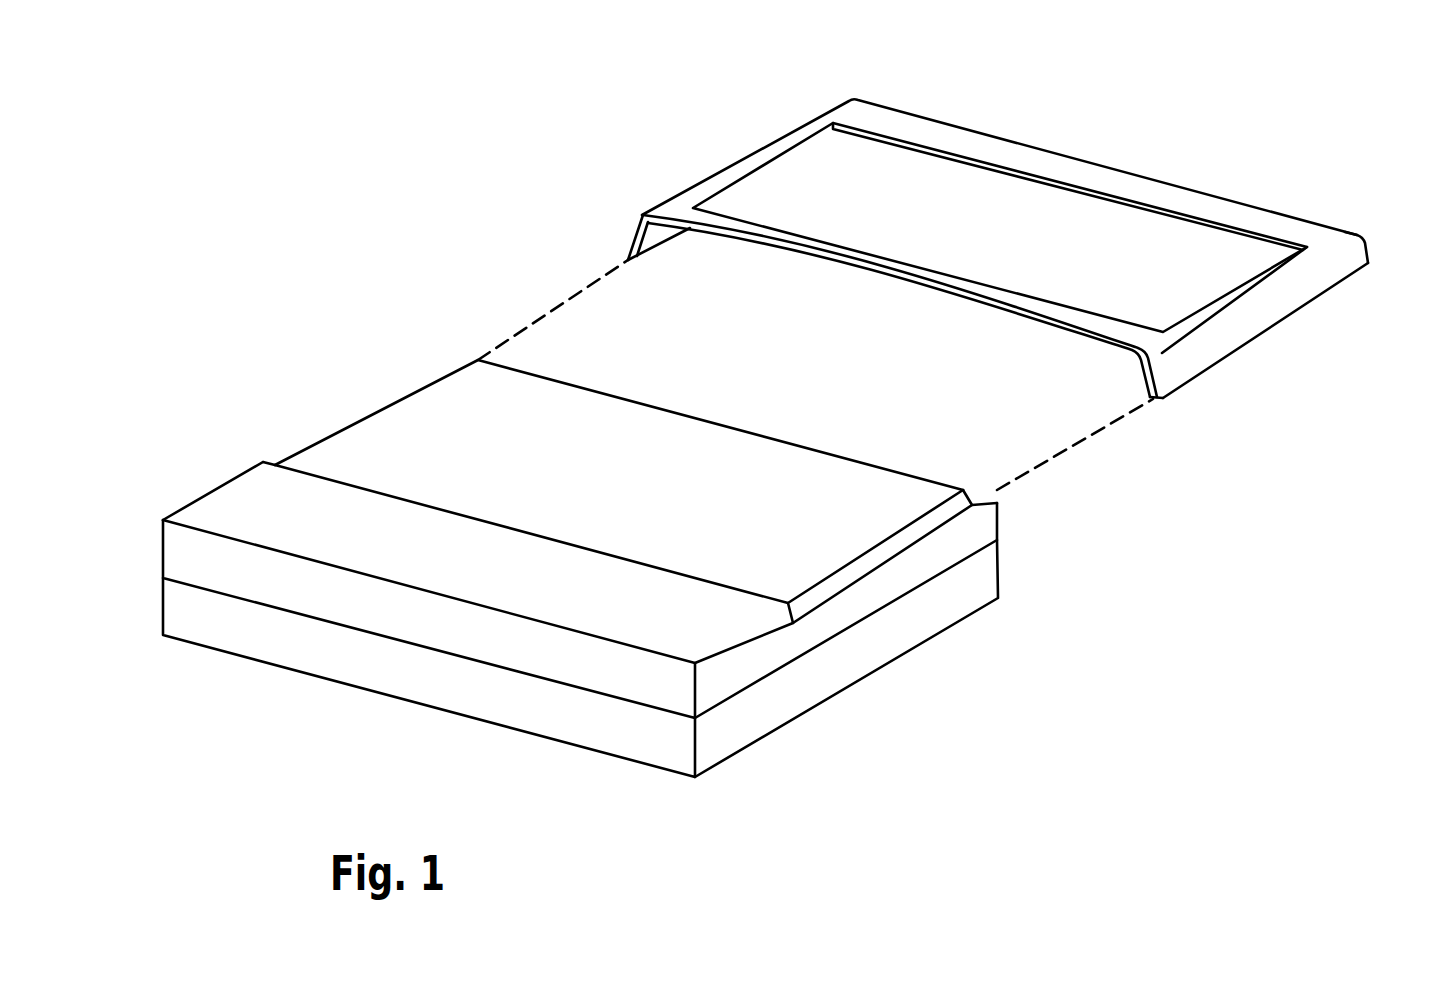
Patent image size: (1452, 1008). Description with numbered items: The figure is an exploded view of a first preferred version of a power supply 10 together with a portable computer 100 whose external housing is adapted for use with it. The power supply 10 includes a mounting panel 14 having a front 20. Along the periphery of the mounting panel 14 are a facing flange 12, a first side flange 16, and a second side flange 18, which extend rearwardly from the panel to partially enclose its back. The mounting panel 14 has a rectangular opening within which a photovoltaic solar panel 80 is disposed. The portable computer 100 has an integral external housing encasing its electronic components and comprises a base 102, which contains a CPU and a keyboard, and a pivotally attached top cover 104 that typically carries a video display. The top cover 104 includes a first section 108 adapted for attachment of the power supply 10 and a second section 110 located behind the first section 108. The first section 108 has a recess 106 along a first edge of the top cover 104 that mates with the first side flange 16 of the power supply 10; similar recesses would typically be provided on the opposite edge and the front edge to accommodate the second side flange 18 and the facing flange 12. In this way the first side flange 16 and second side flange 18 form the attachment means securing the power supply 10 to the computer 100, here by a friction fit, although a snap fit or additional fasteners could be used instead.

The power supply 10 is at (1002, 238).
The facing flange 12 is at (1043, 148).
The mounting panel 14 is at (1107, 323).
The first side flange 16 is at (1307, 280).
The second side flange 18 is at (658, 237).
The front 20 is at (1310, 230).
The photovoltaic solar panel 80 is at (1007, 229).
The portable computer 100 is at (636, 568).
The base 102 is at (895, 620).
The top cover 104 is at (765, 663).
The recess 106 is at (953, 507).
The first section 108 is at (663, 500).
The second section 110 is at (517, 578).